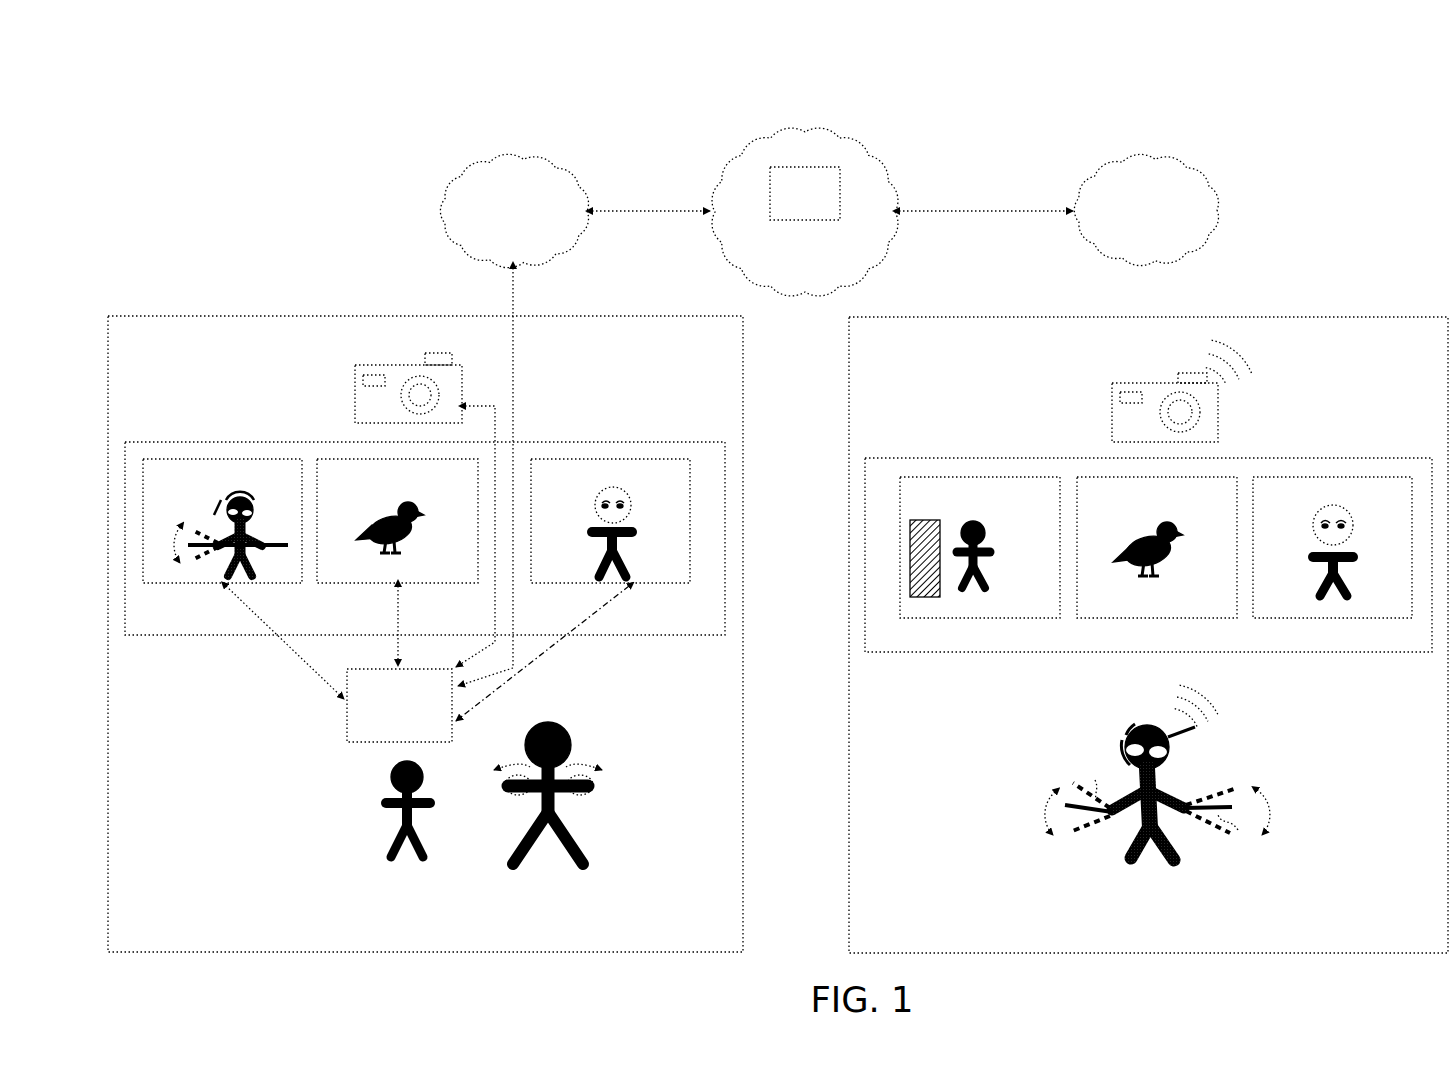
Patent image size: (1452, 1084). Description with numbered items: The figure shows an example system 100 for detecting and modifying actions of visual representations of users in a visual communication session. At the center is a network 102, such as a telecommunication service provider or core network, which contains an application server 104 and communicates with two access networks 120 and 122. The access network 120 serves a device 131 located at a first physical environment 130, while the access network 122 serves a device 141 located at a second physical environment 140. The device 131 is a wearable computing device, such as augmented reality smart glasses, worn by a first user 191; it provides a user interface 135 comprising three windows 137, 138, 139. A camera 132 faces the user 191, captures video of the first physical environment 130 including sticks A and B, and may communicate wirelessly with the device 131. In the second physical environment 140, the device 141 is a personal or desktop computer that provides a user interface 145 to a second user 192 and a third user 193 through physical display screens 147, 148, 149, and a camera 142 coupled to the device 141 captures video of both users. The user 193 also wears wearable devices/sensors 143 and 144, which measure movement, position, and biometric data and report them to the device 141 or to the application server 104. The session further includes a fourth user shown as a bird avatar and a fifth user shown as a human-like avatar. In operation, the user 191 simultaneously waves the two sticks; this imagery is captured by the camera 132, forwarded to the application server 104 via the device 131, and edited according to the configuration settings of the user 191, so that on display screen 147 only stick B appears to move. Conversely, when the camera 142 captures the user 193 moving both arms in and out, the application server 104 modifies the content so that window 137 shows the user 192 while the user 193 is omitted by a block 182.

The system 100 is at (138, 137).
The network 102 is at (790, 267).
The application server 104 is at (790, 210).
The access network 120 is at (1132, 237).
The access network 122 is at (500, 237).
The first physical environment 130 is at (1198, 943).
The device 131 is at (1197, 727).
The camera 132 is at (1112, 420).
The user interface 135 is at (1040, 652).
The window 137 is at (980, 526).
The window 138 is at (1157, 564).
The window 139 is at (1332, 587).
The second physical environment 140 is at (486, 943).
The device 141 is at (384, 721).
The camera 142 is at (355, 400).
The wearable device/sensor 143 is at (596, 798).
The wearable device/sensor 144 is at (508, 795).
The user interface 145 is at (645, 635).
The display screen 147 is at (185, 583).
The display screen 148 is at (397, 536).
The display screen 149 is at (620, 508).
The block 182 is at (920, 512).
The first user 191 is at (1157, 800).
The second user 192 is at (412, 865).
The third user 193 is at (559, 821).